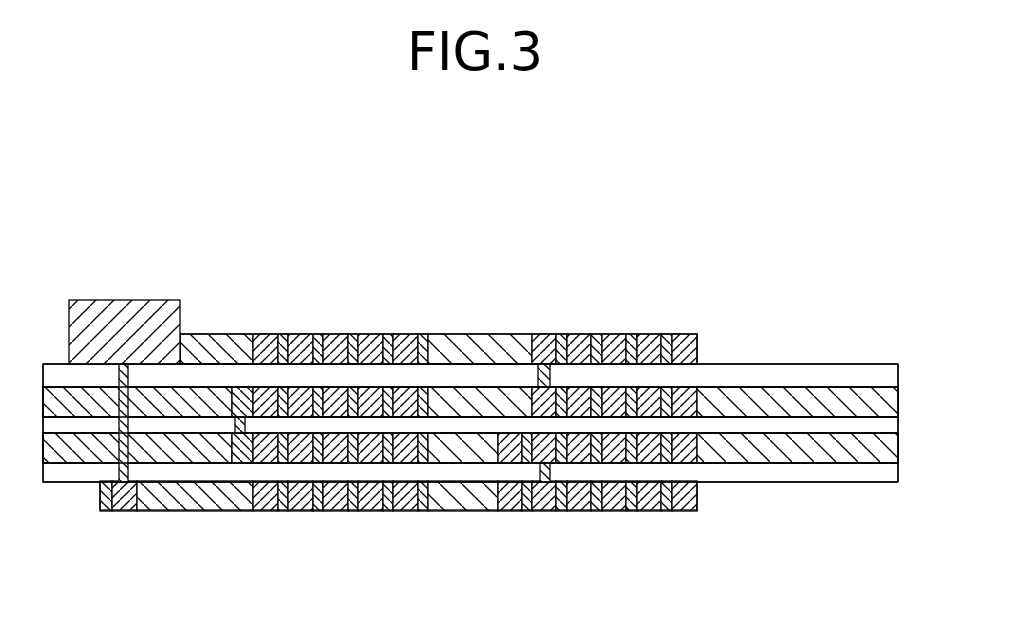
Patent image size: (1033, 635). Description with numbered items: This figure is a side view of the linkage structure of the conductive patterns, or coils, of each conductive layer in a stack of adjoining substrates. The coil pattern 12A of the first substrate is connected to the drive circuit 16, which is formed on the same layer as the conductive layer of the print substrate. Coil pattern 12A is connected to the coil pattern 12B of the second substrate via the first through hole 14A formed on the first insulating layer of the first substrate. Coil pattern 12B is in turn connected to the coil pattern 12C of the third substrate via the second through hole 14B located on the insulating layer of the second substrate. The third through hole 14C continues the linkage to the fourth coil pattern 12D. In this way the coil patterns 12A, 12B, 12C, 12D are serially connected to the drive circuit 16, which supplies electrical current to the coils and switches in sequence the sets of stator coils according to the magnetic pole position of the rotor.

The drive circuit 16 is at (123, 298).
The coil pattern of the first substrate 12A is at (582, 333).
The coil pattern of the second substrate 12B is at (707, 387).
The coil pattern of the third substrate 12C is at (717, 433).
The fourth coil pattern 12D is at (685, 513).
The first through hole 14A is at (534, 372).
The second through hole 14B is at (248, 420).
The third through hole 14C is at (567, 512).